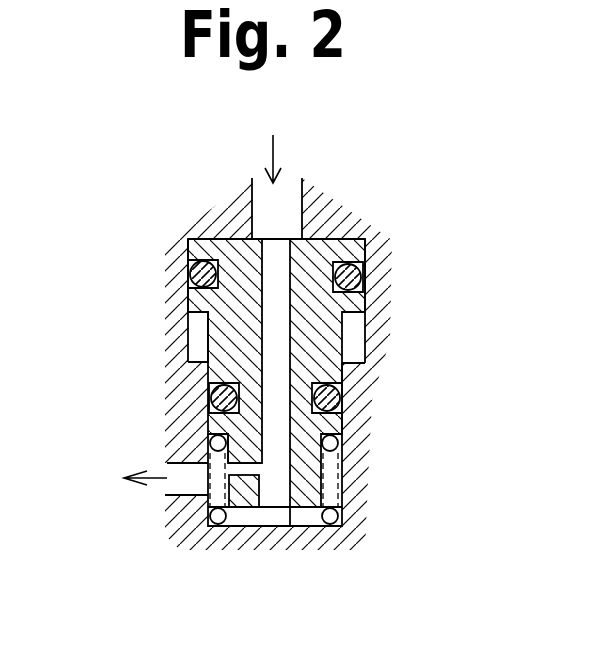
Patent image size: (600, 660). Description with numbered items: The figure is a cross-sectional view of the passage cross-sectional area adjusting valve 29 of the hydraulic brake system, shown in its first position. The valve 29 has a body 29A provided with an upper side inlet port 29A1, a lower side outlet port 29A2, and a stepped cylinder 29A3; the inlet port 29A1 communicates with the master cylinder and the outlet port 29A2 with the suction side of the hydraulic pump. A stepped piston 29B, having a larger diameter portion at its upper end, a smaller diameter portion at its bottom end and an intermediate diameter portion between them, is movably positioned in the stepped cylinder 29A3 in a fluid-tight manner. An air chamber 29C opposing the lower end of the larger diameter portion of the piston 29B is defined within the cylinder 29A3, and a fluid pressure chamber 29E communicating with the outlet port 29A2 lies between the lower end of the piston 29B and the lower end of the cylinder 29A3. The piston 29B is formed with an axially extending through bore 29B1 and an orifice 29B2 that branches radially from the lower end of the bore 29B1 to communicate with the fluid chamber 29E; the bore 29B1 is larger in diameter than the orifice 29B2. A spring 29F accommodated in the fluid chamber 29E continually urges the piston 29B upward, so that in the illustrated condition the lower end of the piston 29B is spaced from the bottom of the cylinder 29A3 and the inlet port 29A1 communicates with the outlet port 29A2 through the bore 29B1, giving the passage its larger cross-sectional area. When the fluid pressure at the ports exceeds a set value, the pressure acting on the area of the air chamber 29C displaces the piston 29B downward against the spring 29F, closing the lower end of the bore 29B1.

The passage cross-sectional area adjusting valve 29 is at (157, 228).
The body 29A is at (323, 223).
The upper side inlet port 29A1 is at (278, 203).
The lower side outlet port 29A2 is at (177, 483).
The stepped cylinder 29A3 is at (356, 336).
The stepped piston 29B is at (217, 368).
The through bore 29B1 is at (275, 472).
The orifice 29B2 is at (240, 468).
The air chamber 29C is at (193, 342).
The fluid pressure chamber 29E is at (279, 518).
The spring 29F is at (338, 443).